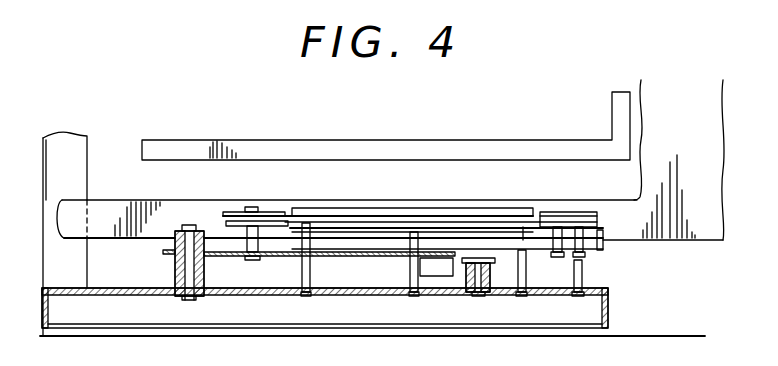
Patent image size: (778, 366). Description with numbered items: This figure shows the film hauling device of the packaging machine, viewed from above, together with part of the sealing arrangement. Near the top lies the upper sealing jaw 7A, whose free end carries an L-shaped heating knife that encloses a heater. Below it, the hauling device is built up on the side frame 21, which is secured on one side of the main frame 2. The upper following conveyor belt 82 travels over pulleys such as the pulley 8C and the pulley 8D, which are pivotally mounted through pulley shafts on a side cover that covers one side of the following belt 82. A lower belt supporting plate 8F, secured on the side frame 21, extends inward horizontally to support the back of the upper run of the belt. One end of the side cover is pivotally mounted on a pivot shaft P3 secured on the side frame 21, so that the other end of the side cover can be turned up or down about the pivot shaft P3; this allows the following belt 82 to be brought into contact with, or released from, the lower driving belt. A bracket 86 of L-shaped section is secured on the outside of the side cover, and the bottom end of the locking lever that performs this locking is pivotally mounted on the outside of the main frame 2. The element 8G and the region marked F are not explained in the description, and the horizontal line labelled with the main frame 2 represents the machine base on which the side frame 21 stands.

The upper sealing jaw 7A is at (345, 140).
The pulley 8C is at (272, 212).
The plate 8G is at (382, 212).
The upper following conveyor belt 82 is at (441, 197).
The lower belt supporting plate 8F is at (557, 212).
The pulley 8D is at (588, 212).
The frame wall F is at (673, 232).
The pivot shaft P3 is at (183, 266).
The bracket 86 is at (422, 266).
The side frame 21 is at (594, 306).
The main frame 2 is at (702, 336).